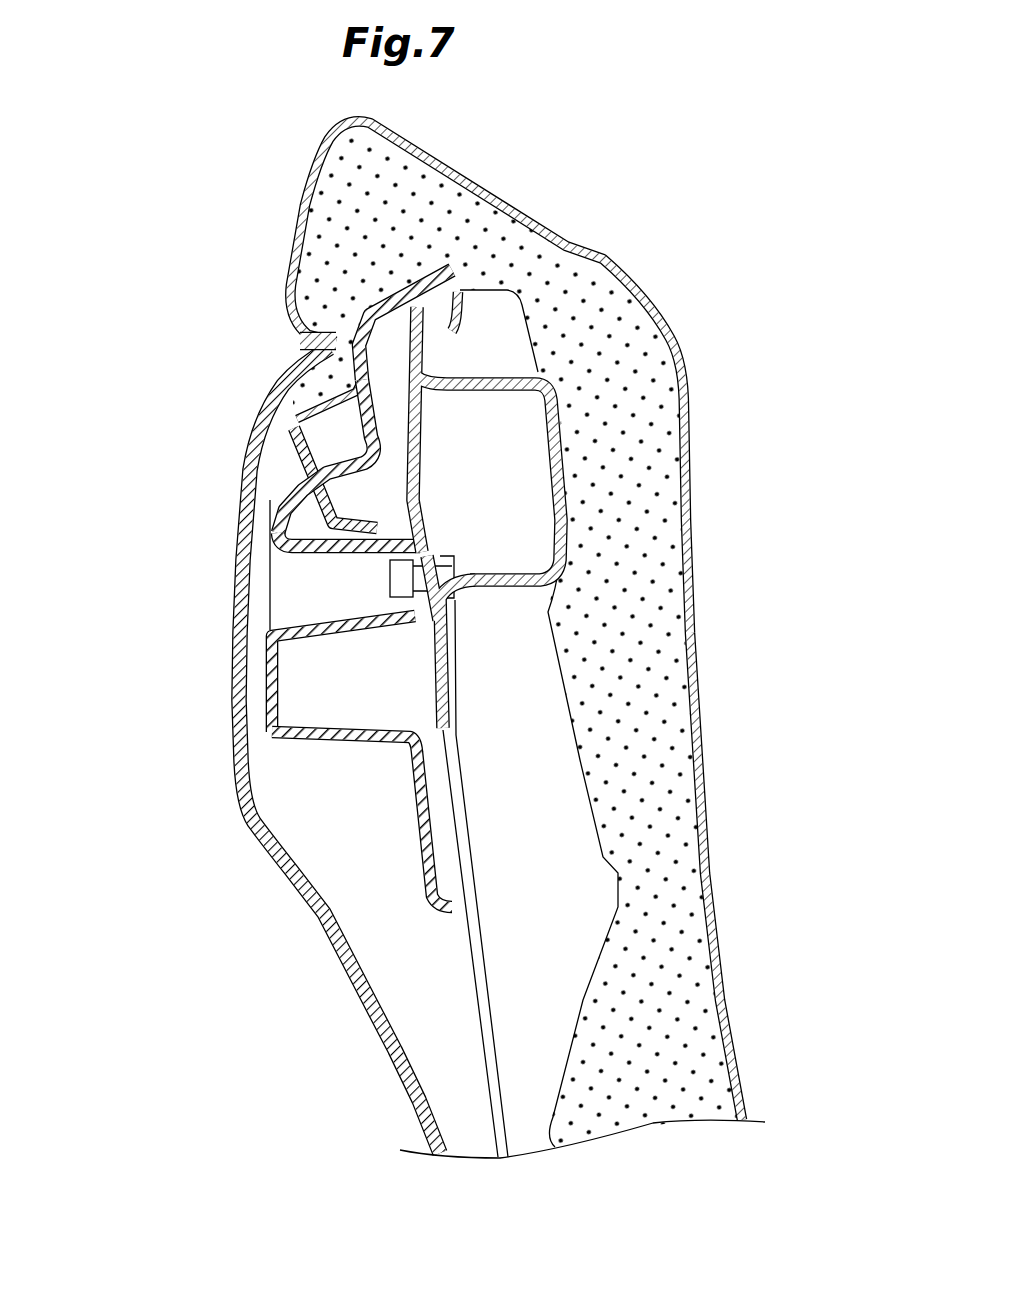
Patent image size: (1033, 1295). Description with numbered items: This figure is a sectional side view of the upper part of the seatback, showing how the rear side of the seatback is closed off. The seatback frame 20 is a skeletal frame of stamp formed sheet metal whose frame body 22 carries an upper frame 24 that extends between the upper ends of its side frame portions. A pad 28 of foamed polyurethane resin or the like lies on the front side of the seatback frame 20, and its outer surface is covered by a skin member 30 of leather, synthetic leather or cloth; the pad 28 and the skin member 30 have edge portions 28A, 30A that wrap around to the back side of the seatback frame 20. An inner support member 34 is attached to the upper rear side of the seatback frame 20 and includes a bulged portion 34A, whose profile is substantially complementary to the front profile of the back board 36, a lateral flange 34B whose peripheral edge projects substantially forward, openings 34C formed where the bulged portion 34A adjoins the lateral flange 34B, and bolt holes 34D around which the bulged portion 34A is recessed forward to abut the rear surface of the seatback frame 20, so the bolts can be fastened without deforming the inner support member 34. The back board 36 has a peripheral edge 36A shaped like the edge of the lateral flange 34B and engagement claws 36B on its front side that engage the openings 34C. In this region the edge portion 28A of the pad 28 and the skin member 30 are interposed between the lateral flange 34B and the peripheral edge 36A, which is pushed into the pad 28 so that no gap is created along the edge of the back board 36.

The seatback frame 20 is at (468, 824).
The frame body 22 is at (452, 663).
The upper frame 24 is at (492, 376).
The pad 28 is at (665, 465).
The edge portion of the pad 28A is at (275, 380).
The skin member 30 is at (688, 543).
The edge portion of the skin member 30A is at (463, 313).
The inner support member 34 is at (256, 535).
The bulged portion 34A is at (267, 670).
The lateral flange 34B is at (365, 320).
The openings 34C is at (360, 455).
The bolt holes 34D is at (280, 598).
The back board 36 is at (224, 704).
The peripheral edge of the back board 36A is at (300, 341).
The engagement claws 36B is at (330, 478).